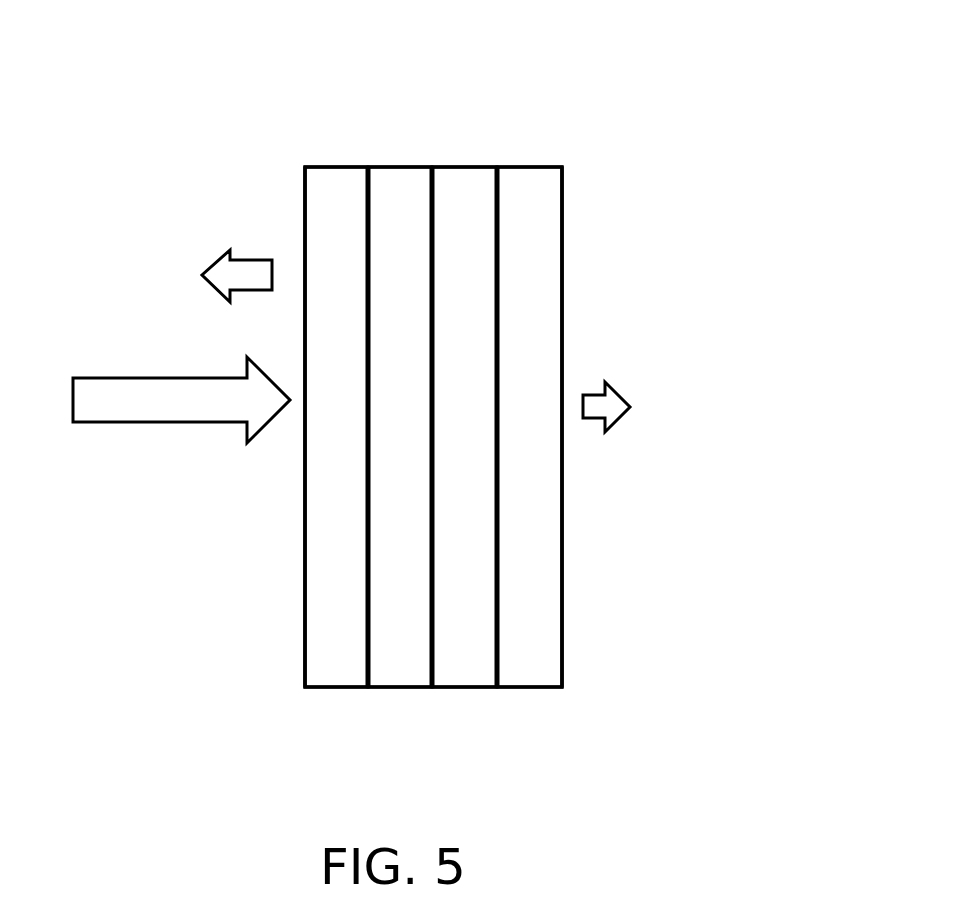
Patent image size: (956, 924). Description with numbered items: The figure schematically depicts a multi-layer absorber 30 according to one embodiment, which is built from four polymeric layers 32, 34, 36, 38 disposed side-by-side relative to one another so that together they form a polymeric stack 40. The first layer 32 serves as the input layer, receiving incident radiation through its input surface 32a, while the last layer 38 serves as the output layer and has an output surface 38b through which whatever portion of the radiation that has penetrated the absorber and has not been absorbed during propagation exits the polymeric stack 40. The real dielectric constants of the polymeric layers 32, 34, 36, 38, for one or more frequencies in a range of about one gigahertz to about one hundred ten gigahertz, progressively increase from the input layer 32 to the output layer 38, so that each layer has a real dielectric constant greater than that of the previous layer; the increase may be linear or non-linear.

The multi-layer absorber 30 is at (622, 63).
The input layer 32 is at (328, 166).
The polymeric layer 34 is at (396, 166).
The polymeric layer 36 is at (463, 166).
The output layer 38 is at (529, 166).
The input surface 32a is at (305, 205).
The output surface 38b is at (562, 288).
The polymeric stack 40 is at (305, 718).